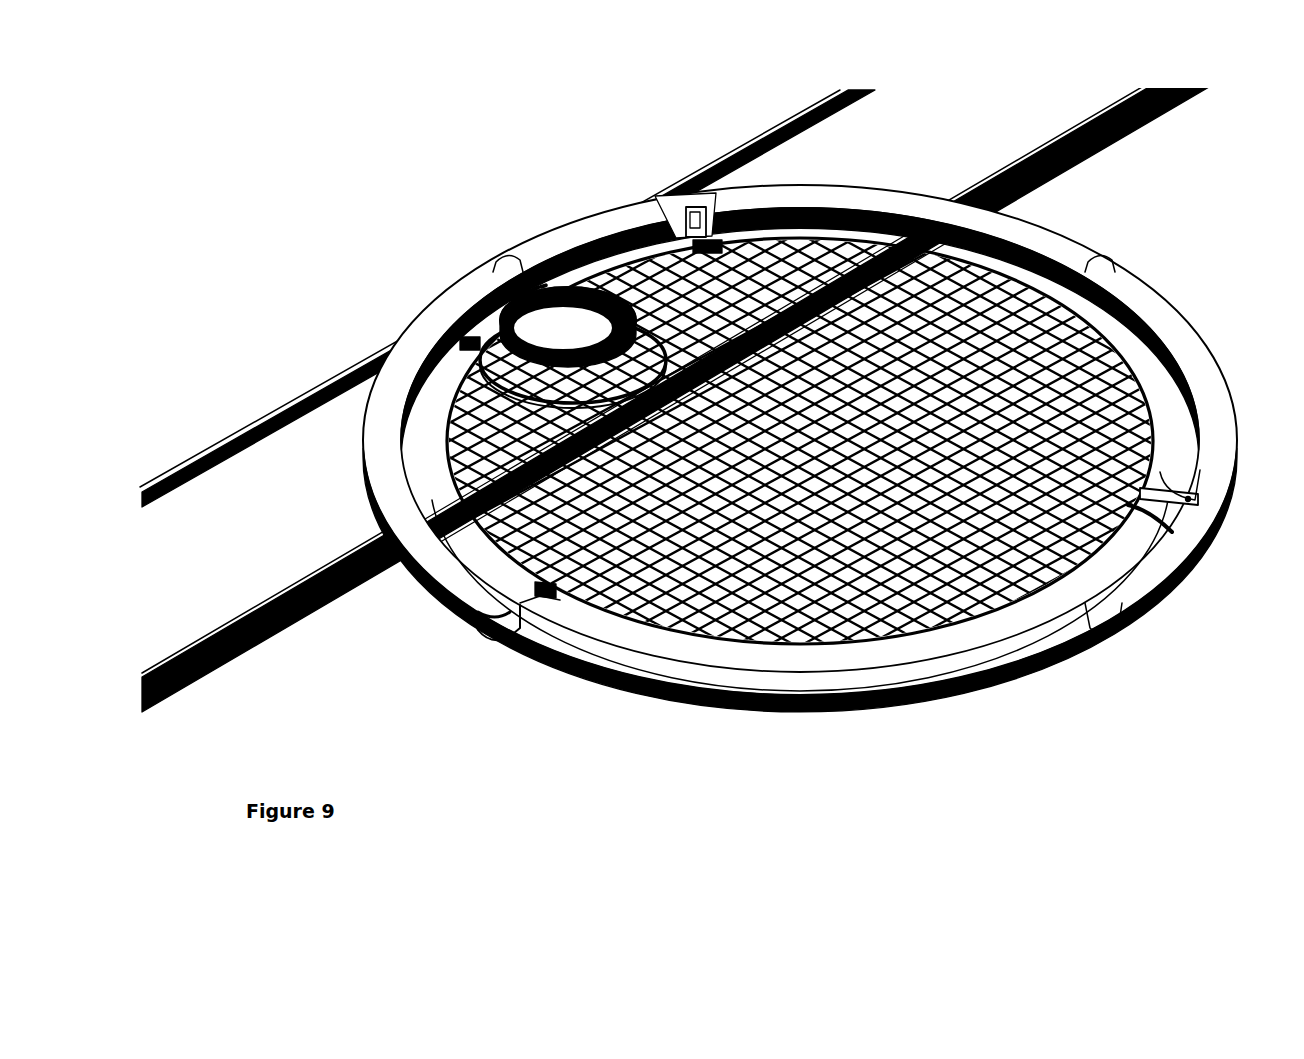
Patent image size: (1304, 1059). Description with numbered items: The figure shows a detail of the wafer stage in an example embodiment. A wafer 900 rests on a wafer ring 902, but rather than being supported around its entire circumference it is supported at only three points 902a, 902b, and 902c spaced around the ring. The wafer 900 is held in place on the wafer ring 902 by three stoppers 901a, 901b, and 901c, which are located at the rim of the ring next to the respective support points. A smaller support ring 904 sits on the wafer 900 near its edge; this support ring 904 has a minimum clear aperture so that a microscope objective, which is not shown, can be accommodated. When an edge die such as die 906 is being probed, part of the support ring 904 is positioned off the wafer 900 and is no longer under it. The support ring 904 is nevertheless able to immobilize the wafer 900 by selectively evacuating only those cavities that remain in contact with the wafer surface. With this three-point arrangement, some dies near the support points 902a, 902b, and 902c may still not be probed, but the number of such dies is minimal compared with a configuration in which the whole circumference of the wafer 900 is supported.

The wafer 900 is at (728, 543).
The wafer ring 902 is at (863, 682).
The stopper 901a is at (467, 613).
The stopper 901b is at (692, 210).
The stopper 901c is at (1175, 498).
The support point 902a is at (540, 598).
The support point 902b is at (680, 222).
The support point 902c is at (1160, 520).
The support ring 904 is at (555, 283).
The edge die 906 is at (515, 297).